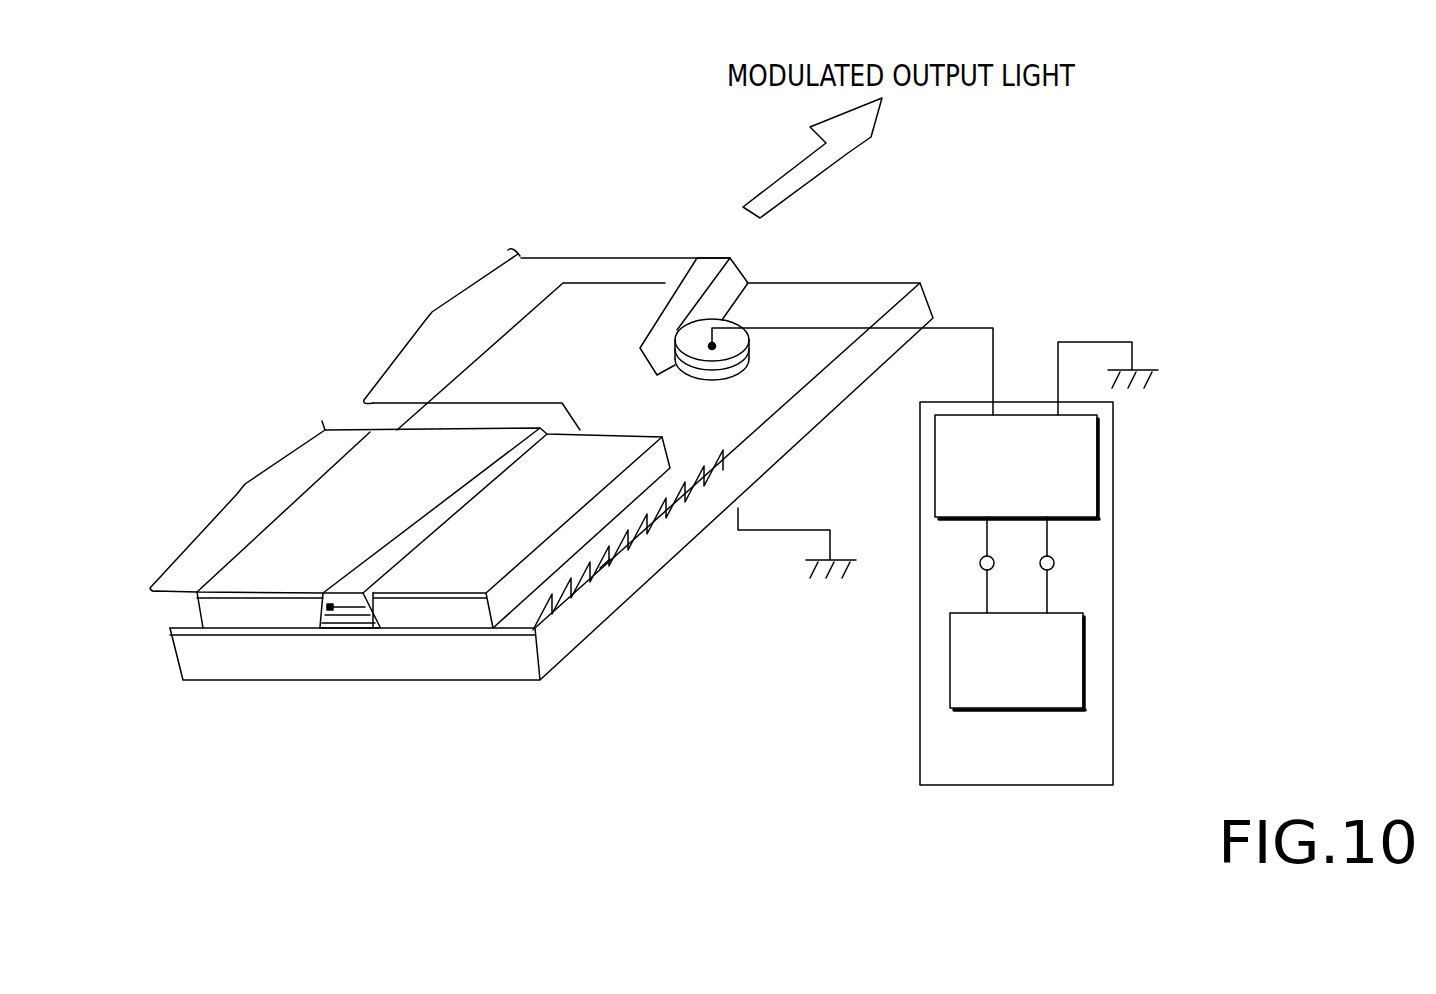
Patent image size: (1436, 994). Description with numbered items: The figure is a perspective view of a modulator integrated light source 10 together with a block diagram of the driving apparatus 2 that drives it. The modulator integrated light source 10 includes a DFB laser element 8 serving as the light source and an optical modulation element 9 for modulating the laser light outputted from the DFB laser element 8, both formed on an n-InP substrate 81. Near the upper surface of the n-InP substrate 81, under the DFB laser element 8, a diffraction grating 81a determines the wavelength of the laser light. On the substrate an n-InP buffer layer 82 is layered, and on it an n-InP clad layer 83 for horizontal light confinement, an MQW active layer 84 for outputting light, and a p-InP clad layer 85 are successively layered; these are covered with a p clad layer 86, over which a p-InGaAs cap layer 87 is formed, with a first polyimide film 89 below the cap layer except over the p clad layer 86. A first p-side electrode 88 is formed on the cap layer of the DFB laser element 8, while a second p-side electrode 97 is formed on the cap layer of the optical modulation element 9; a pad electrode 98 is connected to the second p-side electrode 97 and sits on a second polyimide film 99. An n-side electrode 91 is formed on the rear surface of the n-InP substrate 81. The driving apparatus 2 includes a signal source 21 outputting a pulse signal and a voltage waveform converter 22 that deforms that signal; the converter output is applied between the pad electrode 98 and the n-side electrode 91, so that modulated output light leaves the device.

The driving apparatus 2 is at (1000, 787).
The DFB laser element 8 is at (237, 506).
The optical modulation element 9 is at (441, 329).
The modulator integrated light source 10 is at (862, 272).
The signal source 21 is at (1087, 657).
The voltage waveform converter 22 is at (1098, 475).
The n-InP substrate 81 is at (442, 667).
The diffraction grating 81a is at (645, 590).
The n-InP buffer layer 82 is at (203, 630).
The n-InP clad layer 83 is at (328, 627).
The MQW active layer 84 is at (352, 623).
The p-InP clad layer 85 is at (328, 608).
The p clad layer 86 is at (378, 627).
The p-InGaAs cap layer 87 is at (457, 602).
The first p-side electrode 88 is at (353, 475).
The first polyimide film 89 is at (618, 498).
The n-side electrode 91 is at (597, 593).
The second p-side electrode 97 is at (668, 302).
The pad electrode 98 is at (732, 323).
The second polyimide film 99 is at (748, 357).